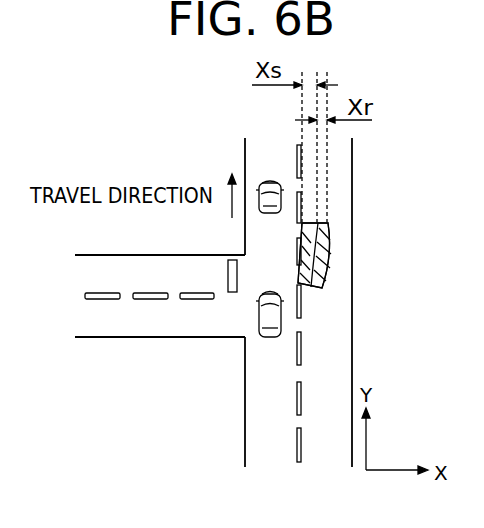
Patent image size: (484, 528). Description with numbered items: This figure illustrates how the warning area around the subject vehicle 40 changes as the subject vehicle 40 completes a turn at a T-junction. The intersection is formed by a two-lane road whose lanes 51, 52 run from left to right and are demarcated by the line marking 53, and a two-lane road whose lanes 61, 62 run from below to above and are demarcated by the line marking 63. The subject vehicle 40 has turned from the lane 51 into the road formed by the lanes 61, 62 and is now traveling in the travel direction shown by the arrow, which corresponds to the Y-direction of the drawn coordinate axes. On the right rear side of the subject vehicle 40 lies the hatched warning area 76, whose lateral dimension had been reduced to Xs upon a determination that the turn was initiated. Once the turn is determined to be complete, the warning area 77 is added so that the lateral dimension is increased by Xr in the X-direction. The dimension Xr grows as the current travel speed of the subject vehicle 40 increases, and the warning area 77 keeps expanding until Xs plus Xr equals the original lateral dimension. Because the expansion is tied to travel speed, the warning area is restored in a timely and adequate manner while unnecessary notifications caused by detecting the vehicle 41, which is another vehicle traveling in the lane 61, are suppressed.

The subject vehicle 40 is at (258, 187).
The vehicle other than the subject vehicle 41 is at (266, 337).
The lane 51 is at (95, 270).
The lane 52 is at (85, 316).
The line marking 53 is at (88, 295).
The lane 61 is at (263, 463).
The lane 62 is at (337, 465).
The line marking 63 is at (300, 452).
The warning area 76 is at (312, 223).
The warning area 77 is at (327, 253).